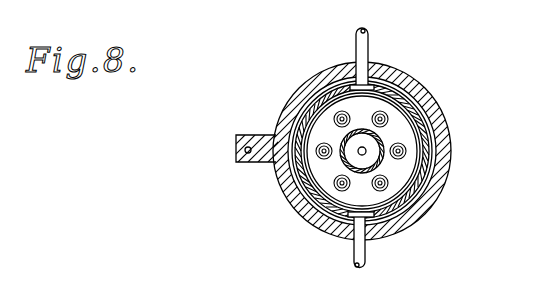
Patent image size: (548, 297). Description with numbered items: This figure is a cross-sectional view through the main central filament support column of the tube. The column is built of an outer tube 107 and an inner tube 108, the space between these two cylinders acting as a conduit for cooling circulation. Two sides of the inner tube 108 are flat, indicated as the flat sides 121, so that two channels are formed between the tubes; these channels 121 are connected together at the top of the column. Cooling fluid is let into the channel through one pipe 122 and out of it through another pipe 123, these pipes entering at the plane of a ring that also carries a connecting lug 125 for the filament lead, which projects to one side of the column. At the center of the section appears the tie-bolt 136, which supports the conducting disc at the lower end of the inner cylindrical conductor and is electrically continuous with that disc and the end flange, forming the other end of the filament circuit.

The outer tube 107 is at (422, 96).
The inner tube 108 is at (418, 130).
The flat sides of inner tube 121 is at (385, 66).
The inlet pipe 122 is at (356, 48).
The outlet pipe 123 is at (366, 252).
The connecting lug 125 is at (290, 110).
The tie-bolt 136 is at (366, 152).